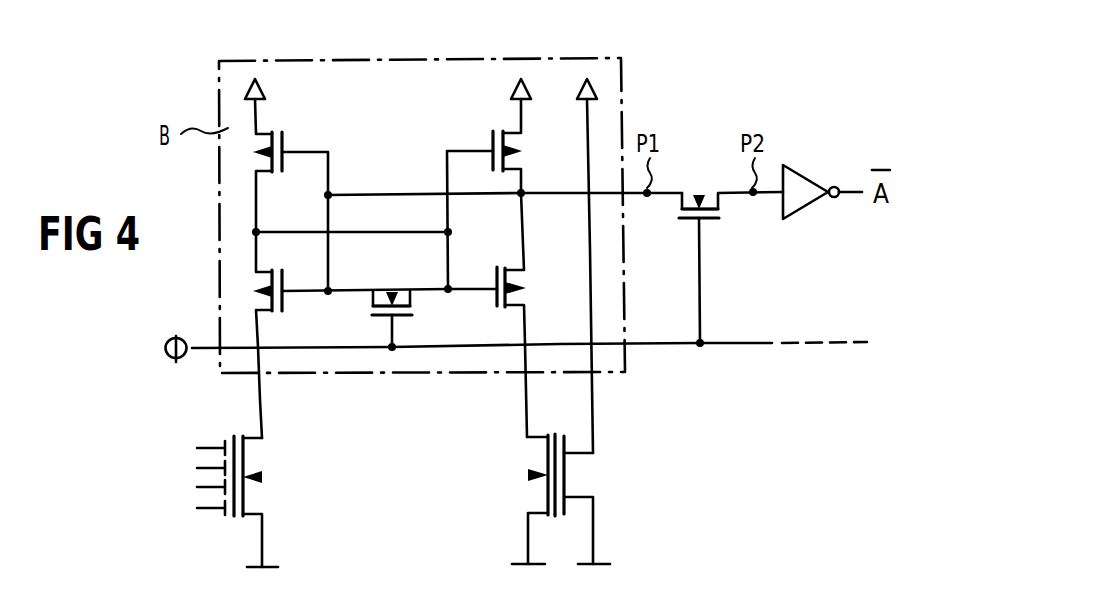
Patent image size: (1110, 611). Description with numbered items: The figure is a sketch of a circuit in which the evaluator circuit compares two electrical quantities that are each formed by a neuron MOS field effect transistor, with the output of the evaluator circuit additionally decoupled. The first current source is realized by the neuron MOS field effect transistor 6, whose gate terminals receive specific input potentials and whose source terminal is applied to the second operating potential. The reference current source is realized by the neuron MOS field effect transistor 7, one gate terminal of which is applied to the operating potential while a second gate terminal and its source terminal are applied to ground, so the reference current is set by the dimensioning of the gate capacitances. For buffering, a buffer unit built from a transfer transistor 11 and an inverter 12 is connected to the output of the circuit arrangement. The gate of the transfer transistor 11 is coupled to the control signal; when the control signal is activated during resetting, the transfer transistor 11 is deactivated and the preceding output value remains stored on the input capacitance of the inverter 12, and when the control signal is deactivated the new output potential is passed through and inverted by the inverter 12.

The neuron MOS field effect transistor 6 is at (252, 500).
The neuron MOS field effect transistor 7 is at (535, 497).
The transfer transistor 11 is at (708, 198).
The inverter 12 is at (801, 167).